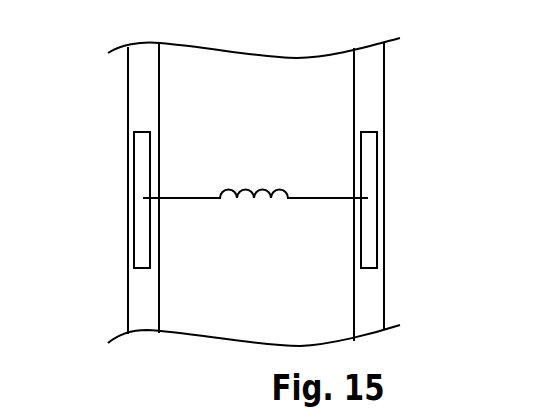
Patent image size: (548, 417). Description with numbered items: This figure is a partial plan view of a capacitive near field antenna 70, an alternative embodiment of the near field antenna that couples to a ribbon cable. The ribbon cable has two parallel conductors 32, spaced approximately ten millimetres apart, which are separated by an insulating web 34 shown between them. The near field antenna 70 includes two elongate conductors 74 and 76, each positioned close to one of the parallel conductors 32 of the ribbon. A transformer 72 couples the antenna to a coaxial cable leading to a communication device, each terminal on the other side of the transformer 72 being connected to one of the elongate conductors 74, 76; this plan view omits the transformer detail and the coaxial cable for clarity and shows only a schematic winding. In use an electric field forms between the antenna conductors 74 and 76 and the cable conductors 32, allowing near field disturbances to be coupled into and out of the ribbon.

The capacitive near field antenna 70 is at (425, 197).
The transformer 72 is at (248, 183).
The elongate conductor 74 is at (140, 305).
The elongate conductor 76 is at (367, 238).
The conductor 32 is at (140, 96).
The insulating web 34 is at (256, 192).